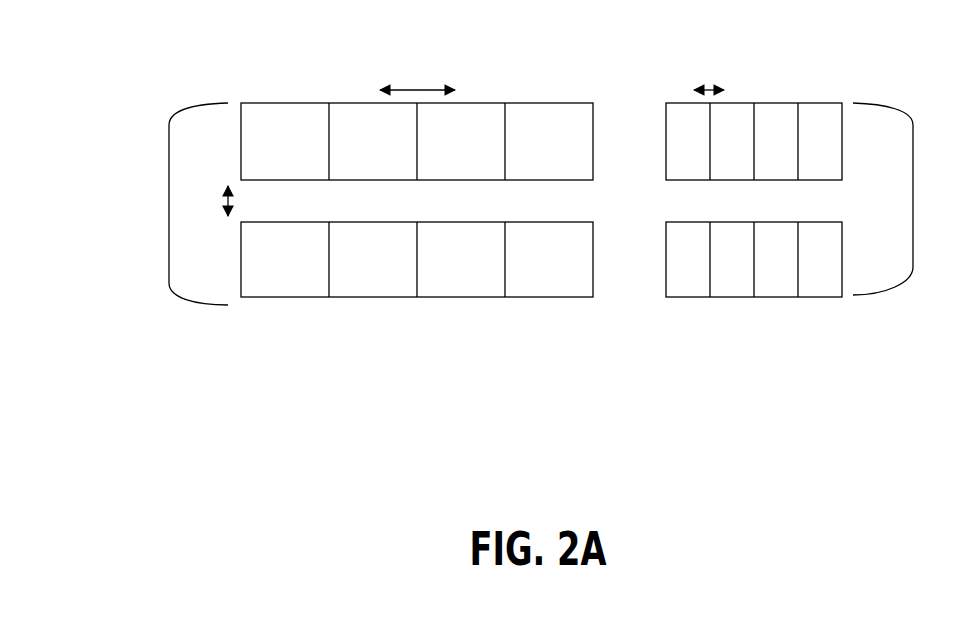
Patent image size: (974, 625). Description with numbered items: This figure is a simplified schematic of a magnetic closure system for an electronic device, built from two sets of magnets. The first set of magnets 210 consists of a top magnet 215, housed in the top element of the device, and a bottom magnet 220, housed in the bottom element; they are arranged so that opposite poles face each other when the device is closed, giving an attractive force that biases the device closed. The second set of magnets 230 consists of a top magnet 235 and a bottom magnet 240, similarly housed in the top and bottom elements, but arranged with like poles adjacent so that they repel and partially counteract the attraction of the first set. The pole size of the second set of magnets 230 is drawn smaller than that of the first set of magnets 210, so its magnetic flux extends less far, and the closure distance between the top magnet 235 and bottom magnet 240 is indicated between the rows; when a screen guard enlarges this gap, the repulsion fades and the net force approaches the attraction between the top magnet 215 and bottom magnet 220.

The first set of magnets 210 is at (169, 205).
The top magnet 215 is at (302, 103).
The bottom magnet 220 is at (292, 297).
The second set of magnets 230 is at (913, 202).
The top magnet 235 is at (747, 103).
The bottom magnet 240 is at (768, 297).